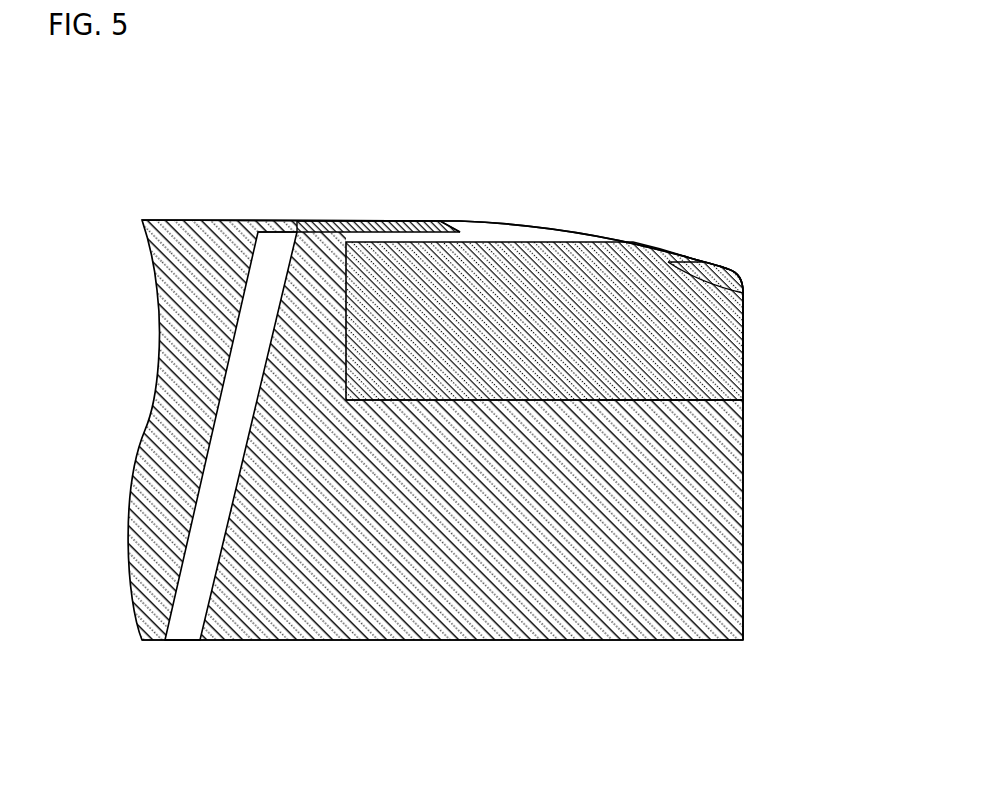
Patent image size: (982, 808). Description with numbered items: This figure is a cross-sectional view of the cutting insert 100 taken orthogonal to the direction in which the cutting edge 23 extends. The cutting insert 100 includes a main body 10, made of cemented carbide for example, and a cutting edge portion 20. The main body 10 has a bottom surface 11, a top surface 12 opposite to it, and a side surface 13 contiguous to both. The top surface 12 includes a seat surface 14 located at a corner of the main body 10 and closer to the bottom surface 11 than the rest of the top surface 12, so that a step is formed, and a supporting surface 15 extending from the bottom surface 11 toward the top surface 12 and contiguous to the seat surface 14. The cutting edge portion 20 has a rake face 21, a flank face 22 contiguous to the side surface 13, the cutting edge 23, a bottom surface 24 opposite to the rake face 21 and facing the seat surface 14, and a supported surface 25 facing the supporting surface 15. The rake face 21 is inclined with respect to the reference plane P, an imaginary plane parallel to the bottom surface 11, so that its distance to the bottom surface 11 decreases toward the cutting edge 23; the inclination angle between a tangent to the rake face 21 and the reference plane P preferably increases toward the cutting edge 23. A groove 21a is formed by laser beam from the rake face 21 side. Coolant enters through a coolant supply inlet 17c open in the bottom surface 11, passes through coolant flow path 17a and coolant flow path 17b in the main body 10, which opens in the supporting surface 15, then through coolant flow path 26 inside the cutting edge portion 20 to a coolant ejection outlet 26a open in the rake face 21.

The cutting insert 100 is at (142, 195).
The main body 10 is at (560, 642).
The bottom surface 11 is at (413, 642).
The top surface 12 is at (208, 220).
The side surface 13 is at (745, 575).
The seat surface 14 is at (645, 405).
The supporting surface 15 is at (340, 226).
The coolant flow path 17a is at (226, 444).
The coolant flow path 17b is at (315, 232).
The coolant supply inlet 17c is at (182, 642).
The cutting edge portion 20 is at (608, 255).
The rake face 21 is at (395, 226).
The groove 21a is at (533, 231).
The flank face 22 is at (745, 337).
The cutting edge 23 is at (740, 271).
The bottom surface 24 is at (695, 394).
The supported surface 25 is at (357, 243).
The coolant flow path 26 is at (442, 222).
The coolant ejection outlet 26a is at (462, 238).
The reference plane P is at (745, 292).